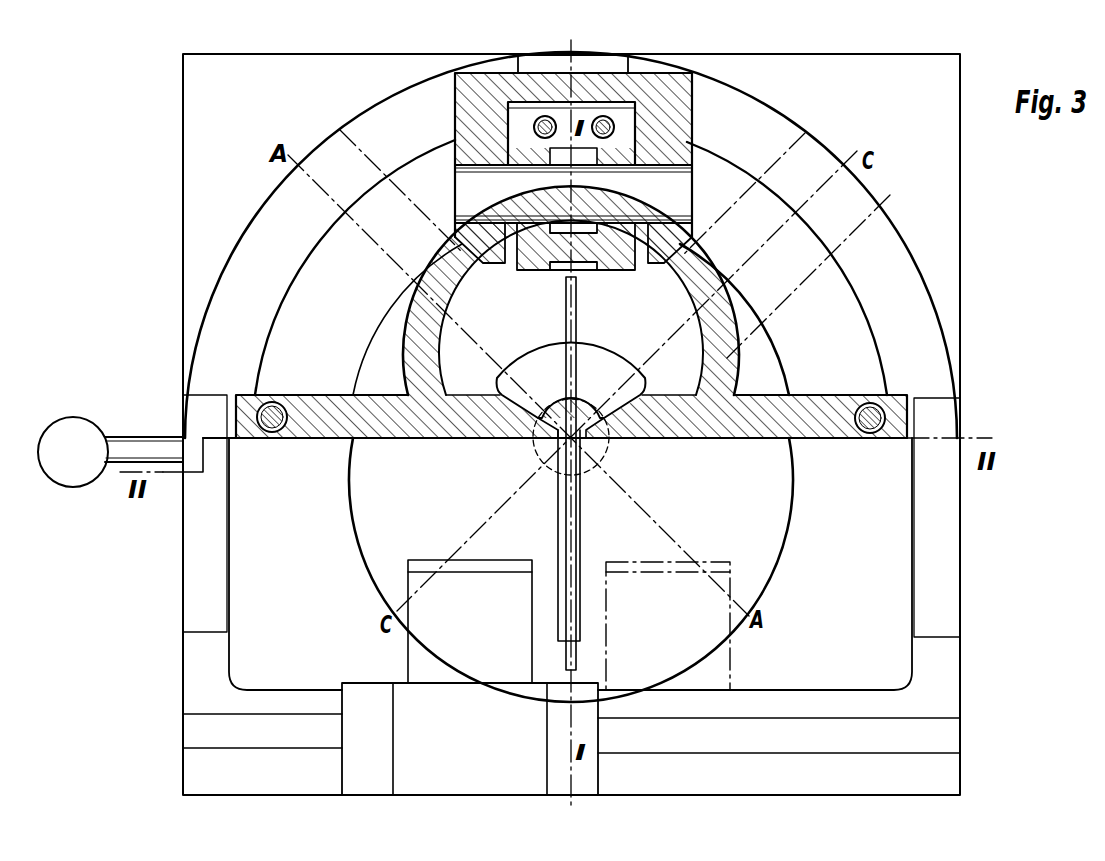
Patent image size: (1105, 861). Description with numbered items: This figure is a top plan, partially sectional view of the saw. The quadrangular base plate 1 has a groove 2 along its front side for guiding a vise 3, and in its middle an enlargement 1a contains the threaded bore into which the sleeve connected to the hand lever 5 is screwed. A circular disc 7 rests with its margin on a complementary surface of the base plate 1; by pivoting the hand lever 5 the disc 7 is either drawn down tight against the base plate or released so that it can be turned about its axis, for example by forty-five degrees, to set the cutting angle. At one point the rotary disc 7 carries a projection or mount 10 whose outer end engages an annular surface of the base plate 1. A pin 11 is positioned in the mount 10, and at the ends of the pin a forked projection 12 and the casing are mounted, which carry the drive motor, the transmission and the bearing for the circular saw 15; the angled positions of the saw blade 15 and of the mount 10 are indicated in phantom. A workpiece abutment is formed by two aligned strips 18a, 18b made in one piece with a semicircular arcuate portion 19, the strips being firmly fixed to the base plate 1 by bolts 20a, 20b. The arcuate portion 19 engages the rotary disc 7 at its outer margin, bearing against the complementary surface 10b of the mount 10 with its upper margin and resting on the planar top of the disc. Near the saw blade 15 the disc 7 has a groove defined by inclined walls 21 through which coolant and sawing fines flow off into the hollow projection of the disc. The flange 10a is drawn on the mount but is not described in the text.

The base plate 1 is at (197, 221).
The enlargement 1a is at (818, 152).
The groove 2 is at (197, 729).
The vise 3 is at (473, 767).
The hand lever 5 is at (137, 437).
The circular disc 7 is at (766, 542).
The projection or mount 10 is at (622, 117).
The flange 10a is at (522, 62).
The complementary surface 10b is at (533, 267).
The pin 11 is at (680, 186).
The forked projection 12 is at (692, 94).
The circular saw 15 is at (478, 532).
The strip 18a is at (396, 440).
The strip 18b is at (684, 430).
The semi-circular arcuate portion or projection 19 is at (478, 384).
The bolt 20a is at (278, 424).
The bolt 20b is at (870, 430).
The groove walls 21 is at (559, 526).